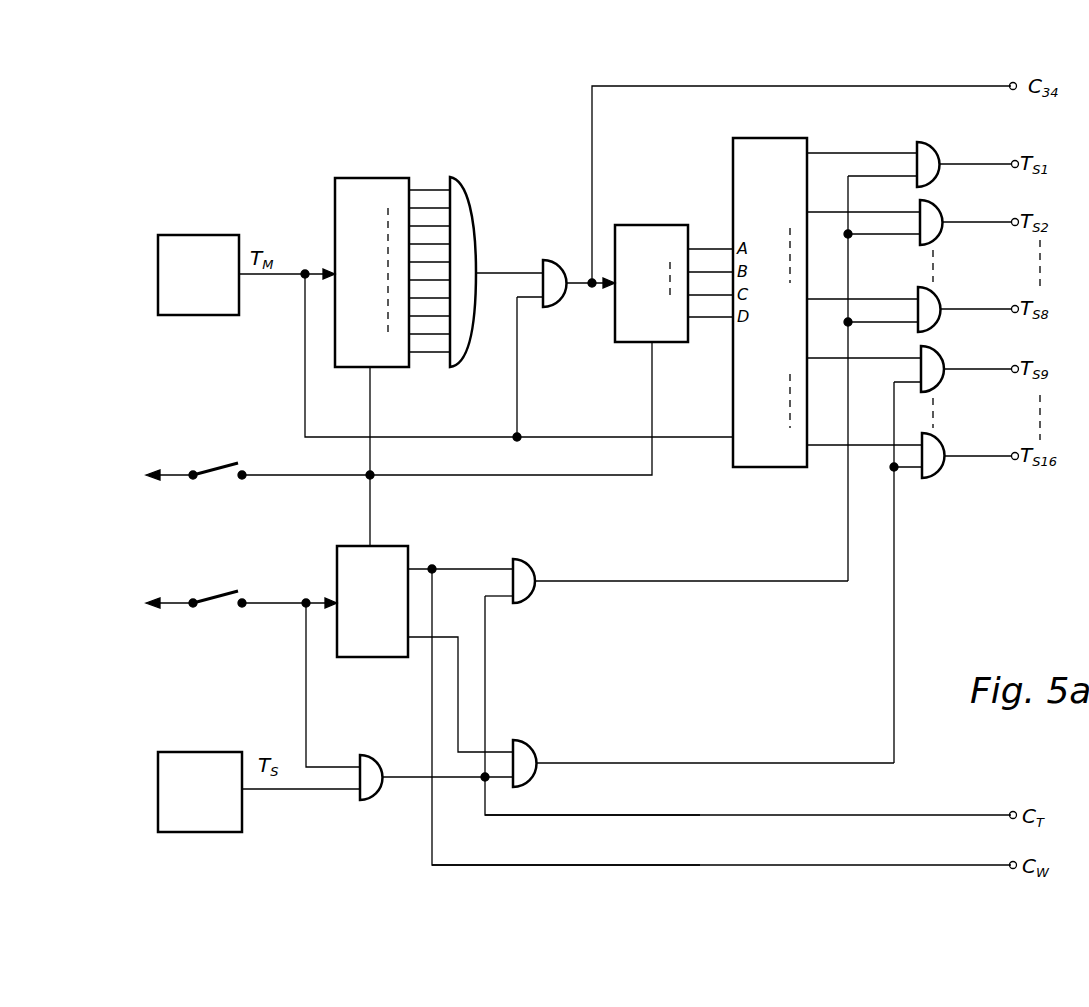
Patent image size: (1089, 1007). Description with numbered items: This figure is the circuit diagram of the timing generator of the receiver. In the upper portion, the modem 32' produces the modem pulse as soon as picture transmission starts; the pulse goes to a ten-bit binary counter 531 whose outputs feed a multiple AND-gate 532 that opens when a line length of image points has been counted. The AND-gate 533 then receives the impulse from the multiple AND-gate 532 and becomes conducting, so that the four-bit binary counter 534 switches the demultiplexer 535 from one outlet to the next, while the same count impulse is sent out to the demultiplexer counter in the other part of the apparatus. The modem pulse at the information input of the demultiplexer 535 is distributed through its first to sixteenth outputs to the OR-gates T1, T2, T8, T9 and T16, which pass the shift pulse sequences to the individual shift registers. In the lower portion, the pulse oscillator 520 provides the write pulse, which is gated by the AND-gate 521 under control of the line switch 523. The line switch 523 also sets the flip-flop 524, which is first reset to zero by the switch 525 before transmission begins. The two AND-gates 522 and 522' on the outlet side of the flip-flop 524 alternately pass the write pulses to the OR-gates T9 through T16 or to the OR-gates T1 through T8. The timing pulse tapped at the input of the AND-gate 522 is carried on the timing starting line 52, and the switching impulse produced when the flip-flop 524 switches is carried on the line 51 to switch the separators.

The modem 32' is at (198, 257).
The 10-bit binary counter 531 is at (348, 186).
The multiple AND-gate 532 is at (484, 186).
The AND-gate 533 is at (556, 258).
The 4-bit binary counter 534 is at (640, 228).
The demultiplexer 535 is at (735, 165).
The switch 525 is at (222, 466).
The flip-flop 524 is at (350, 562).
The line switch 523 is at (214, 596).
The AND-gate 522' is at (545, 559).
The AND-gate 522 is at (539, 741).
The AND-gate 521 is at (372, 786).
The pulse oscillator 520 is at (212, 760).
The timing starting line 52 is at (680, 815).
The line 51 is at (668, 866).
The OR-gate T1 is at (930, 160).
The OR-gate T2 is at (933, 220).
The OR-gate T8 is at (932, 306).
The OR-gate T9 is at (934, 366).
The OR-gate T16 is at (936, 453).